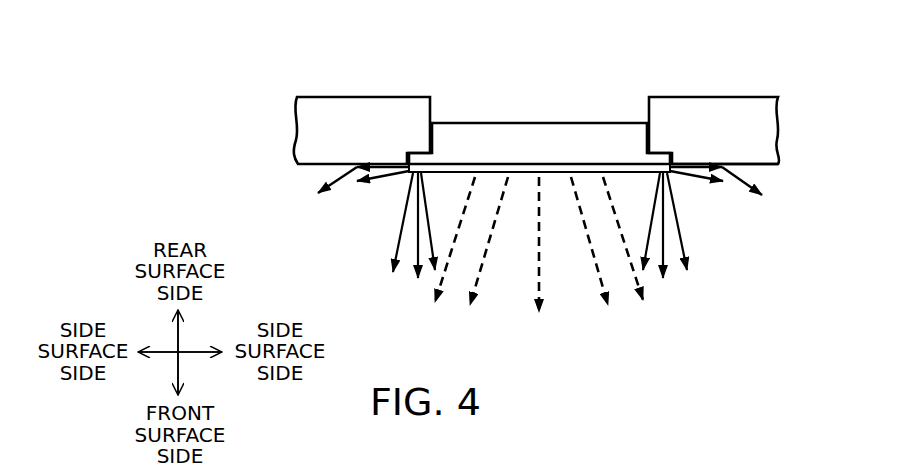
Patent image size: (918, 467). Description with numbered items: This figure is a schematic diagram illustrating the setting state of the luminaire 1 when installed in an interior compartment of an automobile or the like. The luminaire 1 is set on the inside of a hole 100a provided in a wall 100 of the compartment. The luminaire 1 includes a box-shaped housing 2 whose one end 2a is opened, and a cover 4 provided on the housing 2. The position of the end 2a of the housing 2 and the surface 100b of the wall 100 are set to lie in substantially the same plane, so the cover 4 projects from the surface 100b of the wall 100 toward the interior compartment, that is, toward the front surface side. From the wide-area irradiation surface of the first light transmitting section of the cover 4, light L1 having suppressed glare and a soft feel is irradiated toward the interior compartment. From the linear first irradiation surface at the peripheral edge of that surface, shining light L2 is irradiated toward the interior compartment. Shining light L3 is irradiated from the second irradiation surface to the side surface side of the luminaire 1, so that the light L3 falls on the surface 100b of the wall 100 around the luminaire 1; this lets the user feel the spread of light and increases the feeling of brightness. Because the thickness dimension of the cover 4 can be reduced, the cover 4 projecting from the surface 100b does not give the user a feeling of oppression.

The luminaire 1 is at (539, 184).
The housing 2 is at (452, 117).
The end of the housing 2a is at (523, 175).
The cover 4 is at (583, 175).
The wall 100 is at (337, 143).
The hole 100a is at (648, 112).
The surface of the wall 100b is at (766, 166).
The light L1 is at (542, 242).
The shining light L2 is at (418, 252).
The shining light L3 is at (385, 177).